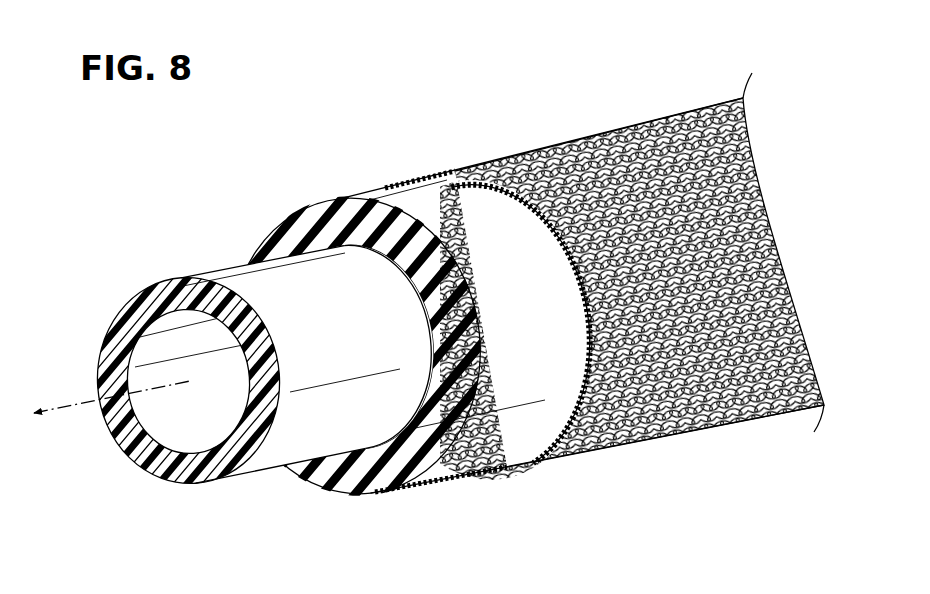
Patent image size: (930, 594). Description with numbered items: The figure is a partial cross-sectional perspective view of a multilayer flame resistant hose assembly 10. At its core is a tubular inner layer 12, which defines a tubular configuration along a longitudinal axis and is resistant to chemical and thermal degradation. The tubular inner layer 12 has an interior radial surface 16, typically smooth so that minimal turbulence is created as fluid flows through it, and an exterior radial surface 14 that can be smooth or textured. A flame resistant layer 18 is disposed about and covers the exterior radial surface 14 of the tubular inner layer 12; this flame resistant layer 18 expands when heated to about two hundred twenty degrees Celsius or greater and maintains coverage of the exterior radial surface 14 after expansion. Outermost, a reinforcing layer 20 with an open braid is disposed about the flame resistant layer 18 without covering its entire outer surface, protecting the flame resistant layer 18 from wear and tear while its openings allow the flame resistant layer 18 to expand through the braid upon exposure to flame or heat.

The hose assembly 10 is at (420, 316).
The tubular inner layer 12 is at (313, 449).
The exterior radial surface 14 is at (221, 266).
The interior radial surface 16 is at (215, 443).
The flame resistant layer 18 is at (351, 197).
The reinforcing layer 20 is at (722, 392).